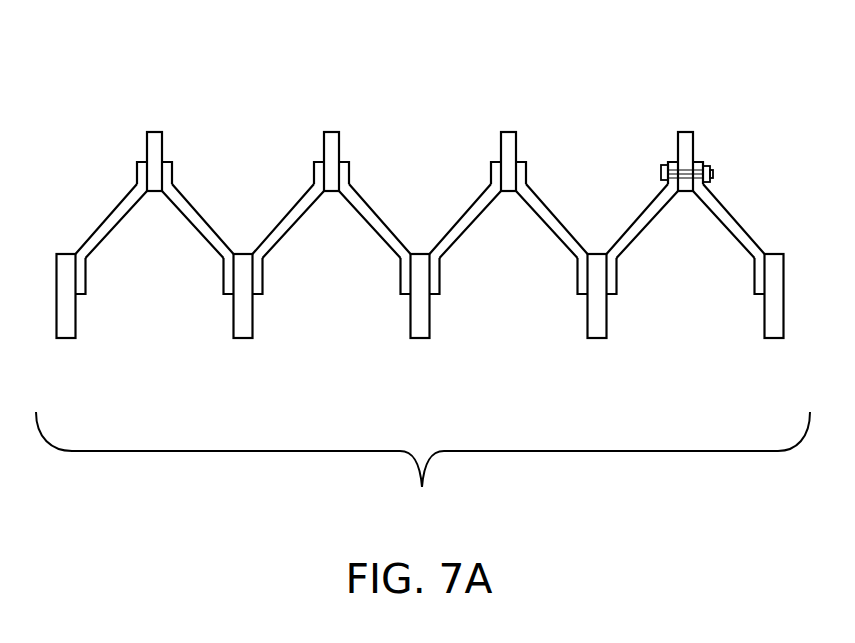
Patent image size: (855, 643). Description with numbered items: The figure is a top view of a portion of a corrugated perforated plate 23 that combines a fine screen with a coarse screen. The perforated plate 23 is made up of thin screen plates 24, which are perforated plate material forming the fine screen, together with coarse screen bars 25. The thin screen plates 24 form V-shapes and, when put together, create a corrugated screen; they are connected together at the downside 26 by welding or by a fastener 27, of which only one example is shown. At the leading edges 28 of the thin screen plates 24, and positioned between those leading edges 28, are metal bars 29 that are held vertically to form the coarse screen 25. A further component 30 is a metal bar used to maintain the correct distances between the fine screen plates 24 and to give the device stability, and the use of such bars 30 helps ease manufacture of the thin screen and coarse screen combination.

The perforated plate 23 is at (743, 134).
The thin screen plate 24 is at (378, 217).
The coarse screen bars 25 is at (423, 466).
The downside 26 is at (241, 147).
The fastener 27 is at (661, 172).
The leading edge 28 is at (582, 297).
The metal bar 29 is at (243, 338).
The metal bar component 30 is at (153, 131).